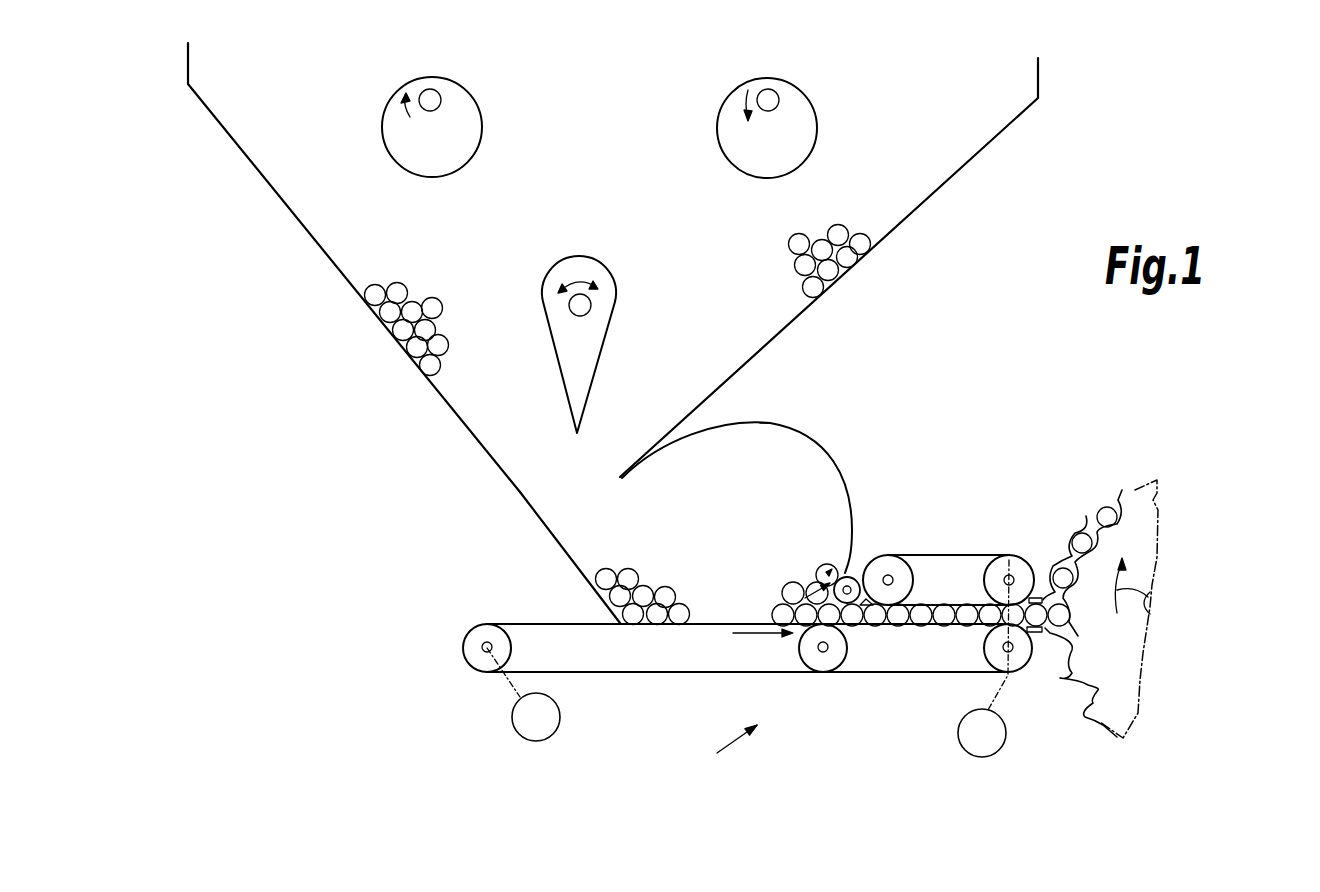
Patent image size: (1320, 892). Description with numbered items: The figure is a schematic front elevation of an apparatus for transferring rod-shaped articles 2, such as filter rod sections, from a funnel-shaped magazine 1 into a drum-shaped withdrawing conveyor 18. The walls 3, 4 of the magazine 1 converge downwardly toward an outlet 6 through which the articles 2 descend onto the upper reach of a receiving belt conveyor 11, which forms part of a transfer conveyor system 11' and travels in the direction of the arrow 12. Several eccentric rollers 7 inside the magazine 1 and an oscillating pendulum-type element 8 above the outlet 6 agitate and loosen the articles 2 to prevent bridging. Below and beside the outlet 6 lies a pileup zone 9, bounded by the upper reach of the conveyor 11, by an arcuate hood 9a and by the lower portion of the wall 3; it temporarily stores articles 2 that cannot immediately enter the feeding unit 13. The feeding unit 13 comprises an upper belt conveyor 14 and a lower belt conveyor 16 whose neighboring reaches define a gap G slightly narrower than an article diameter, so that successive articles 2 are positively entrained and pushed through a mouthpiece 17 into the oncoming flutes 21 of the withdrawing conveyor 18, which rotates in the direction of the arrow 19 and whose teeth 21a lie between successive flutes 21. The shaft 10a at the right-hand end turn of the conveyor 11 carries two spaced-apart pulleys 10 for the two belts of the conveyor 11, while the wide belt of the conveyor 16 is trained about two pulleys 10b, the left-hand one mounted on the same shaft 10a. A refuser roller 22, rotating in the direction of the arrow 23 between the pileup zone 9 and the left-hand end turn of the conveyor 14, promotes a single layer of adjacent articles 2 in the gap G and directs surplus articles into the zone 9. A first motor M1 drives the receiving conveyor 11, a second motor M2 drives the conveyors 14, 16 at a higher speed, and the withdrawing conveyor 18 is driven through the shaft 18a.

The funnel-shaped magazine 1 is at (613, 333).
The rod-shaped articles 2 is at (432, 307).
The wall of the magazine 3 is at (772, 338).
The wall of the magazine 4 is at (335, 267).
The outlet 6 is at (587, 503).
The eccentric rollers 7 is at (458, 115).
The oscillating pendulum-type element 8 is at (607, 310).
The pileup zone 9 is at (820, 468).
The arcuate hood 9a is at (823, 433).
The pulleys 10 is at (477, 672).
The shaft 10a is at (815, 660).
The pulleys 10b is at (843, 643).
The belt conveyor 11 is at (655, 665).
The transfer conveyor system 11' is at (722, 746).
The arrow 12 is at (747, 635).
The feeding unit 13 is at (947, 513).
The upper belt conveyor 14 is at (973, 557).
The lower belt conveyor 16 is at (943, 665).
The mouthpiece 17 is at (1037, 597).
The withdrawing conveyor 18 is at (1143, 557).
The shaft 18a is at (1152, 613).
The arrow 19 is at (1148, 603).
The flutes 21 is at (1078, 692).
The teeth 21a is at (1086, 516).
The refuser roller 22 is at (848, 578).
The arrow 23 is at (802, 585).
The gap G is at (912, 605).
The first motor M1 is at (523, 694).
The second motor M2 is at (983, 658).